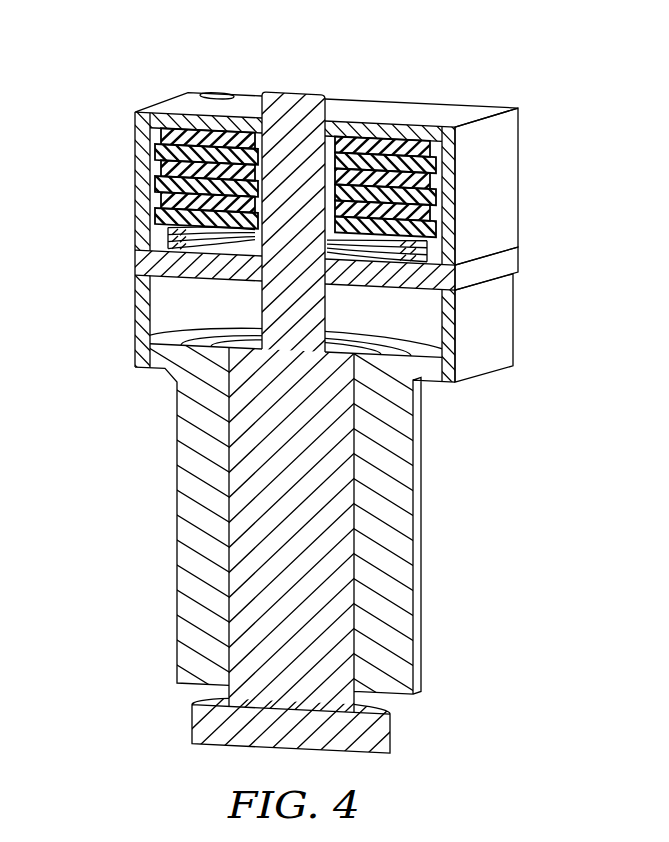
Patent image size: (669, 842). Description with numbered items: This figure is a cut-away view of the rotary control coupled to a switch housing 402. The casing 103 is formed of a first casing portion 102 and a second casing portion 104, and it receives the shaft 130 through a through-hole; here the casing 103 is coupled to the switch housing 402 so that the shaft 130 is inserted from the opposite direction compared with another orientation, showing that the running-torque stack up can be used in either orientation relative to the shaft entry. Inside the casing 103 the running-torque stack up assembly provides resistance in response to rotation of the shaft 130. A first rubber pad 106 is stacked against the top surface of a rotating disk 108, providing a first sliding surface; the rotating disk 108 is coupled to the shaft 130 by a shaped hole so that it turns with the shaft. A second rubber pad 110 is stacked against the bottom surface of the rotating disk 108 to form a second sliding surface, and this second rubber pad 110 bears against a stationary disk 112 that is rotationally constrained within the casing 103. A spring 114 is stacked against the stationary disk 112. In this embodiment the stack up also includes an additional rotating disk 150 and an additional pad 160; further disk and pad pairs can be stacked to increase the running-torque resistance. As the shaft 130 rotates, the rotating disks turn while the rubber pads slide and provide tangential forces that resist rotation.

The first casing portion 102 is at (520, 168).
The casing 103 is at (590, 122).
The second casing portion 104 is at (520, 253).
The first rubber pad 106 is at (135, 167).
The rotating disk 108 is at (137, 183).
The second rubber pad 110 is at (137, 200).
The stationary disk 112 is at (138, 217).
The spring 114 is at (153, 234).
The shaft 130 is at (298, 91).
The additional rotating disk 150 is at (135, 150).
The additional pad 160 is at (137, 132).
The switch housing 402 is at (483, 366).